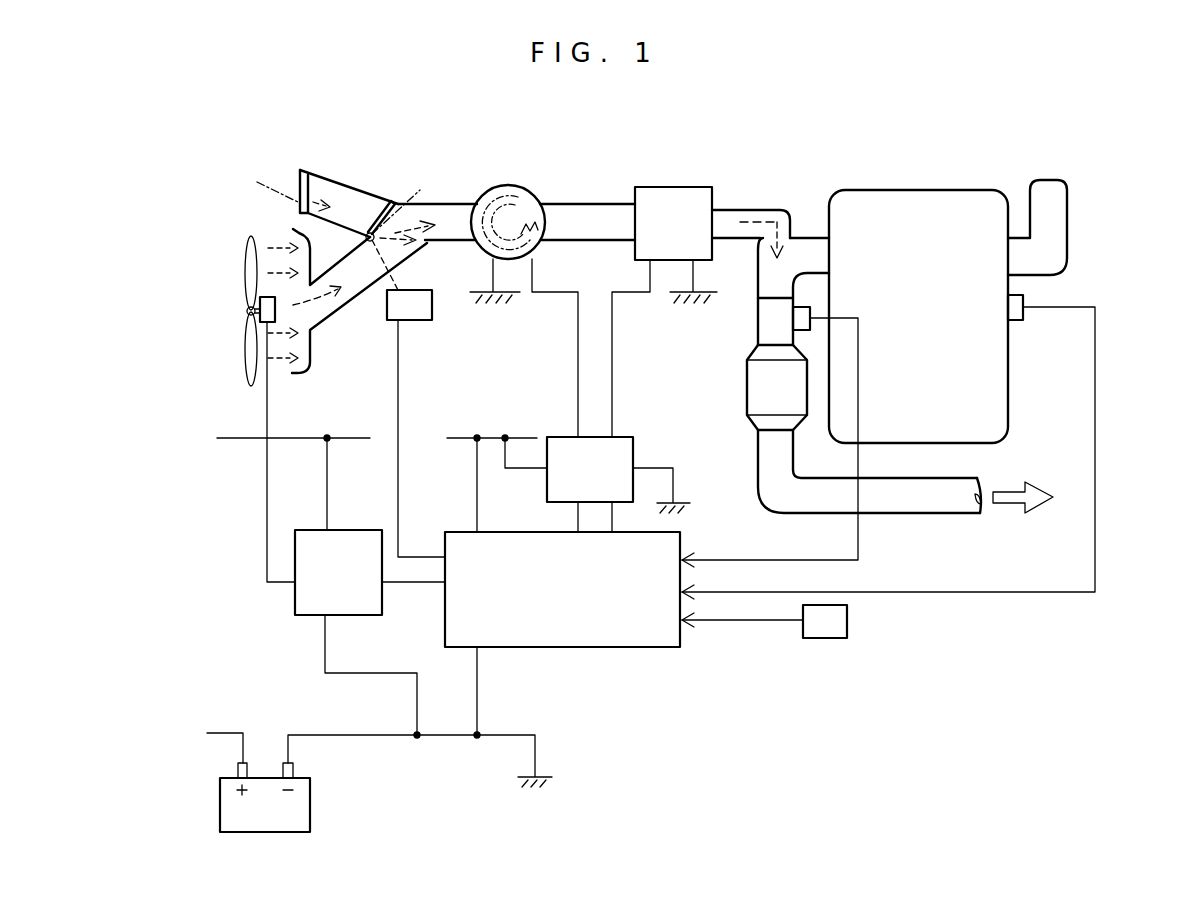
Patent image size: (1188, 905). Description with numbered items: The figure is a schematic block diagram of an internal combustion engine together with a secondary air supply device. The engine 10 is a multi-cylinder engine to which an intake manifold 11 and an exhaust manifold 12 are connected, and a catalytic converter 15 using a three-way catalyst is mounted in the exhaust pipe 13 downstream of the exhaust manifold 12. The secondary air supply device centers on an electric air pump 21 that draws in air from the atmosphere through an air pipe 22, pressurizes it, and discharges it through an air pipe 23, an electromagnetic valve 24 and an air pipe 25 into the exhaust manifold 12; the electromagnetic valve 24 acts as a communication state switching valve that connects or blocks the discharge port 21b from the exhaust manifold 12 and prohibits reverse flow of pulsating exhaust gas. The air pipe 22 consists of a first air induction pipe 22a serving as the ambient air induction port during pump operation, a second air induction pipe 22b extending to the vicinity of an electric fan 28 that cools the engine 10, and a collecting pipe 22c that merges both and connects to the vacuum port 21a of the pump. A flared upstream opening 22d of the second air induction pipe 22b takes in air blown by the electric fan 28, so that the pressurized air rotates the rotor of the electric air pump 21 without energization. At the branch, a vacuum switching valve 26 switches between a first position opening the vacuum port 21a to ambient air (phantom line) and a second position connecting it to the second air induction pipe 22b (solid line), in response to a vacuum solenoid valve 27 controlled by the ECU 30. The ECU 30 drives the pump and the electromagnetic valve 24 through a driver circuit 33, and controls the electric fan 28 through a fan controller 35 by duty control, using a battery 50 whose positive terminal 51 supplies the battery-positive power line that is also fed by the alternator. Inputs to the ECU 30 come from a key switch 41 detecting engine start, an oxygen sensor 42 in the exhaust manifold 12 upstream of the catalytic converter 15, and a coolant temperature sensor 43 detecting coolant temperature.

The engine 10 is at (930, 189).
The intake manifold 11 is at (1068, 198).
The exhaust manifold 12 is at (810, 237).
The exhaust pipe 13 is at (758, 445).
The catalytic converter 15 is at (747, 373).
The electric air pump 21 is at (507, 185).
The vacuum port 21a is at (470, 223).
The discharge port 21b is at (546, 224).
The air pipe 22 is at (336, 244).
The first air induction pipe 22a is at (299, 172).
The second air induction pipe 22b is at (350, 323).
The collecting pipe 22c is at (453, 203).
The upstream opening 22d is at (292, 228).
The air pipe 23 is at (585, 204).
The electromagnetic valve 24 is at (685, 187).
The air pipe 25 is at (740, 210).
The vacuum switching valve 26 is at (385, 200).
The vacuum solenoid valve 27 is at (432, 305).
The electric fan 28 is at (245, 273).
The ECU 30 is at (565, 648).
The driver circuit 33 is at (625, 437).
The fan controller 35 is at (350, 529).
The key switch 41 is at (827, 638).
The oxygen sensor 42 is at (812, 308).
The coolant temperature sensor 43 is at (1023, 288).
The battery 50 is at (310, 812).
The positive terminal 51 is at (237, 770).